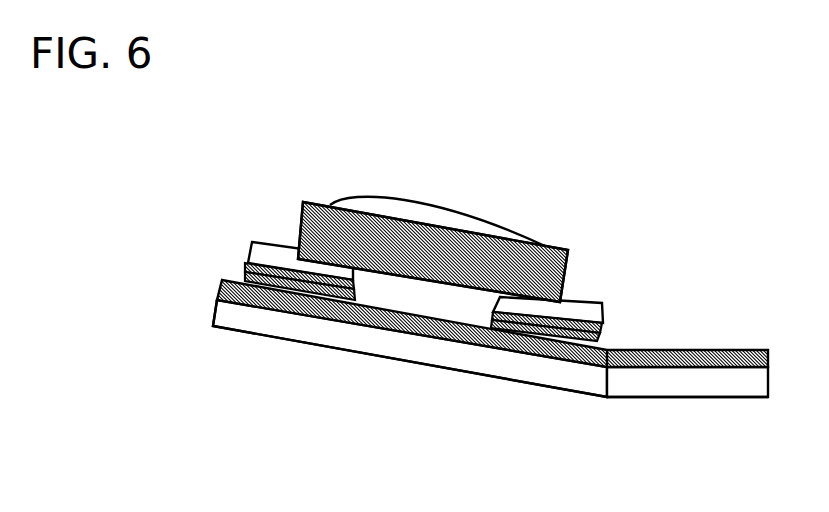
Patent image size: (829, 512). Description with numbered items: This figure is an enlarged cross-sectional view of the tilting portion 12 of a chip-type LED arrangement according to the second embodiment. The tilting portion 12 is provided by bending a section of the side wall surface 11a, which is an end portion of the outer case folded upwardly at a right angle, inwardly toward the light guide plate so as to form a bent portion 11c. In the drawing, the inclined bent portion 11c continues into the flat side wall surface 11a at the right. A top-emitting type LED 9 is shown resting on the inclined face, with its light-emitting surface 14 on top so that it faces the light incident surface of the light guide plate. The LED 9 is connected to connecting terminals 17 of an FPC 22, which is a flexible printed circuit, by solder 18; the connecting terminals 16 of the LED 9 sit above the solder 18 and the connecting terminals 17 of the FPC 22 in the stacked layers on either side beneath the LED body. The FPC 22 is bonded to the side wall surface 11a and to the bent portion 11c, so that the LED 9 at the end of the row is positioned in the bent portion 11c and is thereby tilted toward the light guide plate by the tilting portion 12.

The top-emitting type LED 9 is at (558, 228).
The light-emitting surface 14 is at (415, 208).
The connecting terminals 16 is at (258, 240).
The solder 18 is at (243, 266).
The connecting terminals 17 is at (243, 277).
The FPC 22 is at (688, 350).
The tilting portion 12 is at (490, 397).
The bent portion 11c is at (443, 357).
The side wall surface 11a is at (683, 383).